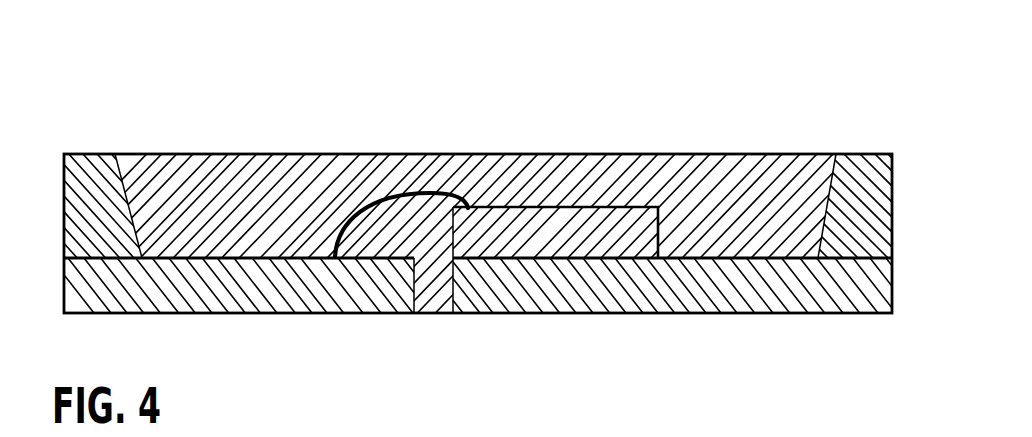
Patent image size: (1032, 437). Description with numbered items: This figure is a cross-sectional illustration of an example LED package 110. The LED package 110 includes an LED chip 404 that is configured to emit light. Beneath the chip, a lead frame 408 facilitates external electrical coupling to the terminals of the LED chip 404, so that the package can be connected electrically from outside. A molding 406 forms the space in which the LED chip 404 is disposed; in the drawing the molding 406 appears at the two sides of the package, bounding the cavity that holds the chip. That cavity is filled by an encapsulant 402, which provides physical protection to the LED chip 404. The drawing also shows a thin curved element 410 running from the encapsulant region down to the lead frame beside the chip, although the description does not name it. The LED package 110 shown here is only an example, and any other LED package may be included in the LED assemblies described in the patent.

The LED package 110 is at (341, 130).
The encapsulant 402 is at (252, 221).
The LED chip 404 is at (586, 246).
The molding 406 is at (88, 154).
The lead frame 408 is at (275, 314).
The wire bond 410 is at (398, 193).